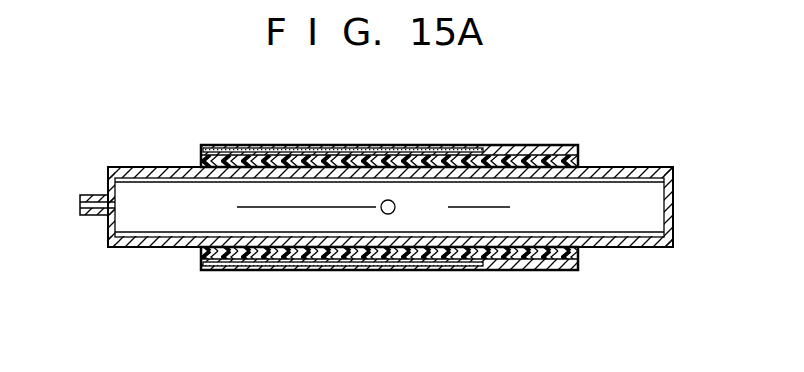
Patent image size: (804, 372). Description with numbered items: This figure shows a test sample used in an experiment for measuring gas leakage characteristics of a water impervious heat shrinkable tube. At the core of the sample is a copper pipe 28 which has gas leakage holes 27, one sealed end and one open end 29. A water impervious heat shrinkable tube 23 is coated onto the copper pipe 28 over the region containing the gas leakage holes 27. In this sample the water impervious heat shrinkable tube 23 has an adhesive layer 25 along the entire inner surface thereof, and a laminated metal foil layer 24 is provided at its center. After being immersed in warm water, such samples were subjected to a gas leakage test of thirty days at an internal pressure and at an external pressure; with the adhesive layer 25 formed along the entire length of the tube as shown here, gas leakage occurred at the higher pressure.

The water impervious heat shrinkable tube 23 is at (536, 154).
The laminated metal foil layer 24 is at (443, 152).
The adhesive layer 25 is at (491, 162).
The gas leakage hole 27 is at (396, 207).
The copper pipe 28 is at (631, 167).
The open end 29 is at (92, 216).